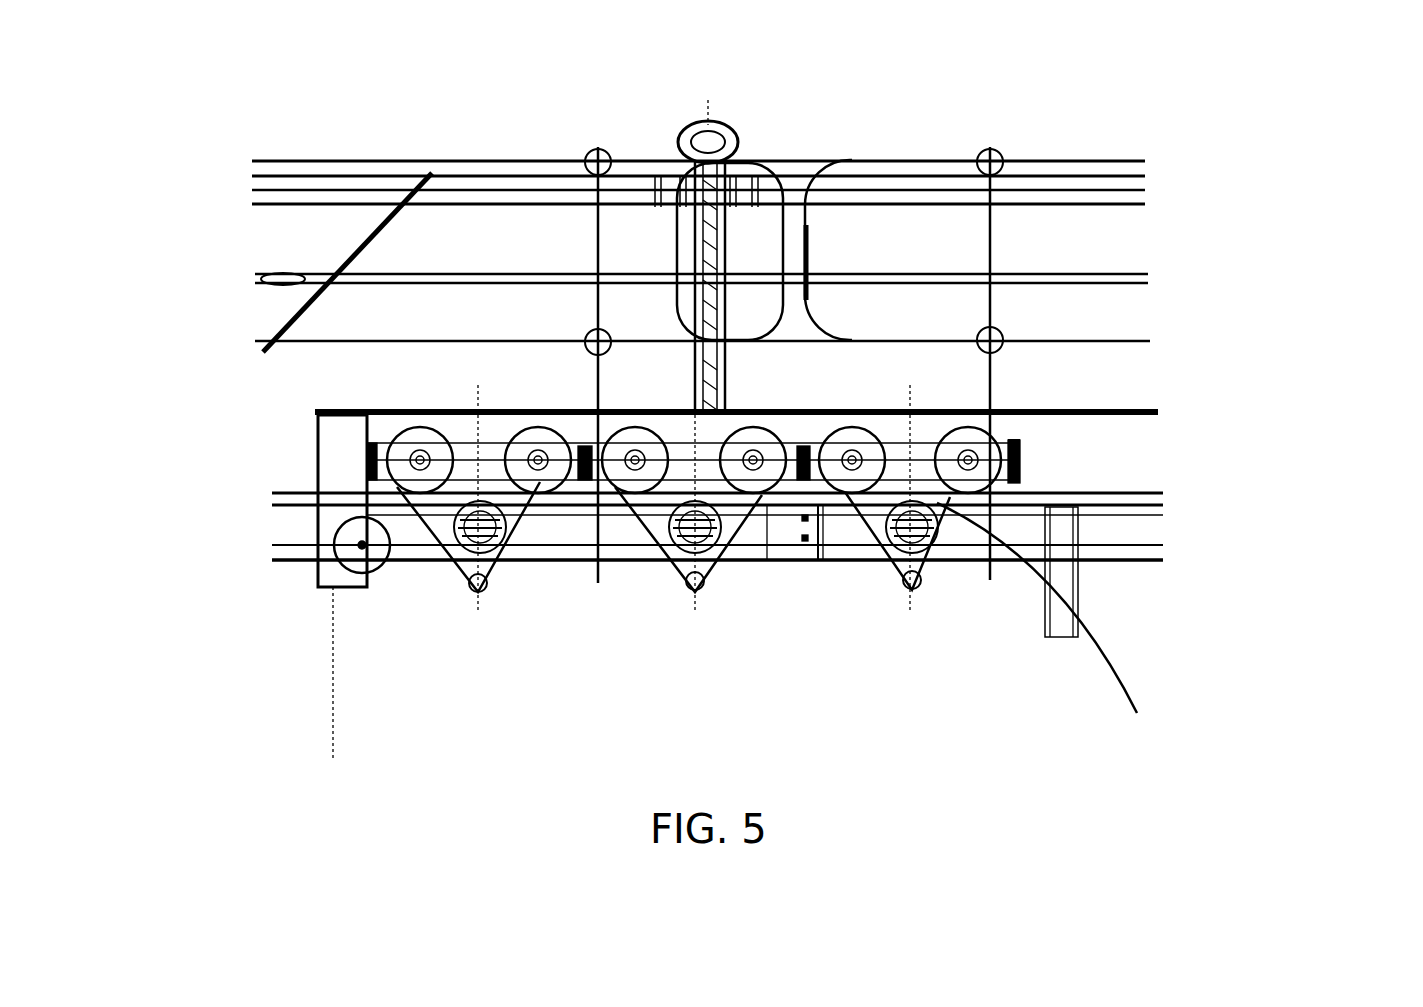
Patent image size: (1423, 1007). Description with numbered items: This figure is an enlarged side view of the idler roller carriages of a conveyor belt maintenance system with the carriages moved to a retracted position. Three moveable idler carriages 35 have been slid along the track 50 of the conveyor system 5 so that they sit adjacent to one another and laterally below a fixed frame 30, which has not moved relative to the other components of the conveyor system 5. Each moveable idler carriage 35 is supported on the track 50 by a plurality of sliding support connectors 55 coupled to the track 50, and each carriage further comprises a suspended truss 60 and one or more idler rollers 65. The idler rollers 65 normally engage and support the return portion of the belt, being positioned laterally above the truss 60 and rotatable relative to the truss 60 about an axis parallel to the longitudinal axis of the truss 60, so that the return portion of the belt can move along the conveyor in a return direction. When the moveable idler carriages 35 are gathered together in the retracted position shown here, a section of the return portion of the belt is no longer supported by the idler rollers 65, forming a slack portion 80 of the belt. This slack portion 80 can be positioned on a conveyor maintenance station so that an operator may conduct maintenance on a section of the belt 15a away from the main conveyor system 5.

The conveyor system 5 is at (436, 134).
The section of the belt 15a is at (1095, 276).
The fixed frame 30 is at (728, 225).
The moveable idler carriage 35 is at (800, 478).
The track 50 is at (1020, 468).
The sliding support connector 55 is at (343, 417).
The suspended truss 60 is at (912, 595).
The idler roller 65 is at (717, 565).
The slack portion 80 is at (1122, 668).